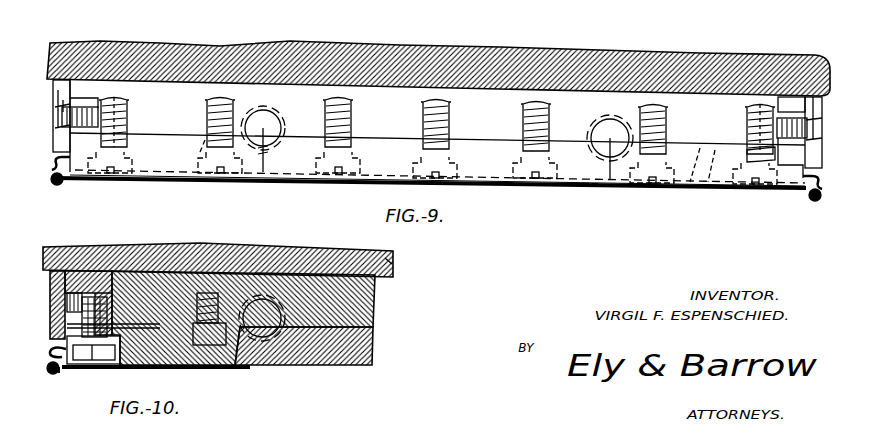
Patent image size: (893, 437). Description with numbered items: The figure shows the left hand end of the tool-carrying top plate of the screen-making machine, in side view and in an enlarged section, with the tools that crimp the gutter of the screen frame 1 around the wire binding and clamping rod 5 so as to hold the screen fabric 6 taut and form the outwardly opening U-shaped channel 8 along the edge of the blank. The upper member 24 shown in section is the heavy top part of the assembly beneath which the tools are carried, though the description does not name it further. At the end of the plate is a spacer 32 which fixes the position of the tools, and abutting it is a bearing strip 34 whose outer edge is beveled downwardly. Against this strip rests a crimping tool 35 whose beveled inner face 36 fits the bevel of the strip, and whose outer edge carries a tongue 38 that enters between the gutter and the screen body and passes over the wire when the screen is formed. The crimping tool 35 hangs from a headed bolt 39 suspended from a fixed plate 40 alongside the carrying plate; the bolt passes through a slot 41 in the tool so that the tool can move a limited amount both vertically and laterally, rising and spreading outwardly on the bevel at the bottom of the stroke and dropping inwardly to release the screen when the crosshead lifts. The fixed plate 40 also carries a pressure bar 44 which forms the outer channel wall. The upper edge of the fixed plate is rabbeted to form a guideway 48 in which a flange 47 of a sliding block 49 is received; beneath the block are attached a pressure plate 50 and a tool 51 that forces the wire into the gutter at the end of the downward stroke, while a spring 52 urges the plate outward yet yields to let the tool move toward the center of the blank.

In FIG. 9, the frame 1 is at (606, 190).
In FIG. 10, the frame 1 is at (213, 368).
In FIG. 9, the wire binding and clamping rod 5 is at (58, 186).
In FIG. 10, the wire binding and clamping rod 5 is at (52, 376).
In FIG. 9, the screen fabric 6 is at (590, 192).
In FIG. 10, the screen fabric 6 is at (248, 367).
In FIG. 10, the U-shaped channel 8 is at (53, 351).
In FIG. 9, the top member 24 is at (577, 55).
In FIG. 10, the top member 24 is at (296, 259).
In FIG. 9, the spacer 32 is at (376, 160).
In FIG. 9, the bearing strip 34 is at (185, 162).
In FIG. 10, the crimping tool 35 is at (147, 362).
In FIG. 9, the beveled inner face 36 is at (170, 140).
In FIG. 10, the beveled inner face 36 is at (168, 365).
In FIG. 9, the tongue 38 is at (66, 178).
In FIG. 10, the tongue 38 is at (58, 374).
In FIG. 9, the headed bolt 39 is at (98, 135).
In FIG. 10, the headed bolt 39 is at (103, 346).
In FIG. 9, the fixed plate 40 is at (95, 88).
In FIG. 10, the fixed plate 40 is at (80, 300).
In FIG. 9, the slot 41 is at (133, 140).
In FIG. 10, the slot 41 is at (70, 338).
In FIG. 9, the pressure bar 44 is at (61, 96).
In FIG. 10, the pressure bar 44 is at (60, 300).
In FIG. 10, the flange 47 is at (107, 298).
In FIG. 10, the guideway 48 is at (128, 275).
In FIG. 9, the block 49 is at (438, 60).
In FIG. 10, the pressure plate 50 is at (330, 355).
In FIG. 9, the tool 51 is at (478, 160).
In FIG. 9, the spring 52 is at (266, 105).
In FIG. 10, the spring 52 is at (262, 300).